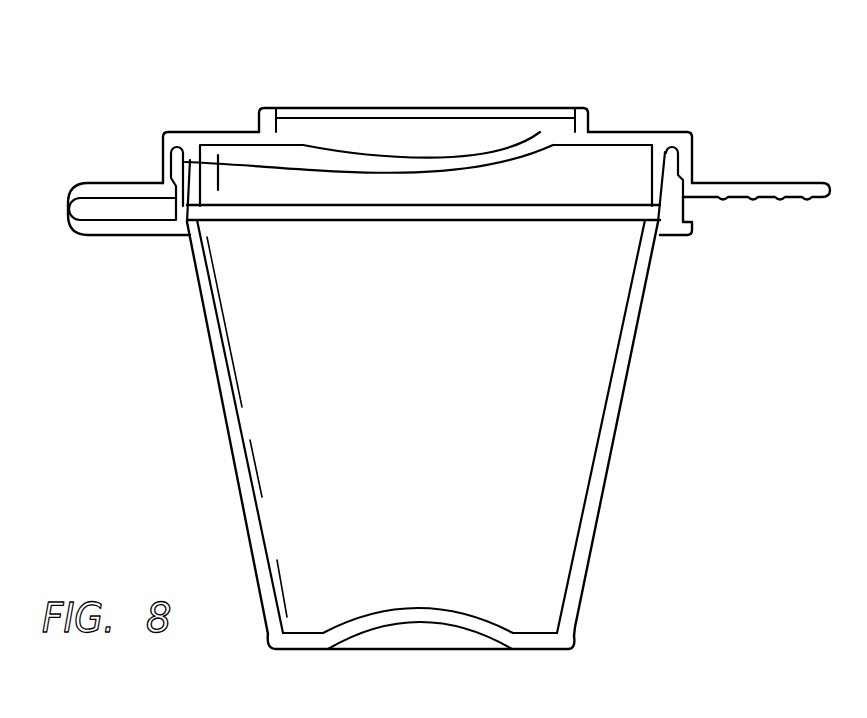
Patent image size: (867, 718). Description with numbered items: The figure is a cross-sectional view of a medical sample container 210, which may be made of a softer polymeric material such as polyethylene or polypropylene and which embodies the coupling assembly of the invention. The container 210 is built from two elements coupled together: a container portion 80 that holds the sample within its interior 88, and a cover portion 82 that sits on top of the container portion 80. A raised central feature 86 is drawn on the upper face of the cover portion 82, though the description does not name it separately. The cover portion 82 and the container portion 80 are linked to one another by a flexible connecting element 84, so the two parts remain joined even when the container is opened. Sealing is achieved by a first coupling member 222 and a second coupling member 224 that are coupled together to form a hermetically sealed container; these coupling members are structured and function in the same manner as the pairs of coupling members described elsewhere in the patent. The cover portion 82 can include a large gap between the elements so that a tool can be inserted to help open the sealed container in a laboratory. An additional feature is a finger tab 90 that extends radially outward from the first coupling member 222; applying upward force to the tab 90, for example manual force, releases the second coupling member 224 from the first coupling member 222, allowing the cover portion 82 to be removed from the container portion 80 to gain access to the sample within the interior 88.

The container portion 80 is at (227, 430).
The cover portion 82 is at (203, 130).
The flexible connecting element 84 is at (90, 232).
The raised plate on lid 86 is at (317, 105).
The interior 88 is at (327, 499).
The finger tab 90 is at (762, 183).
The medical sample container 210 is at (662, 466).
The first coupling member 222 is at (170, 156).
The second coupling member 224 is at (196, 160).